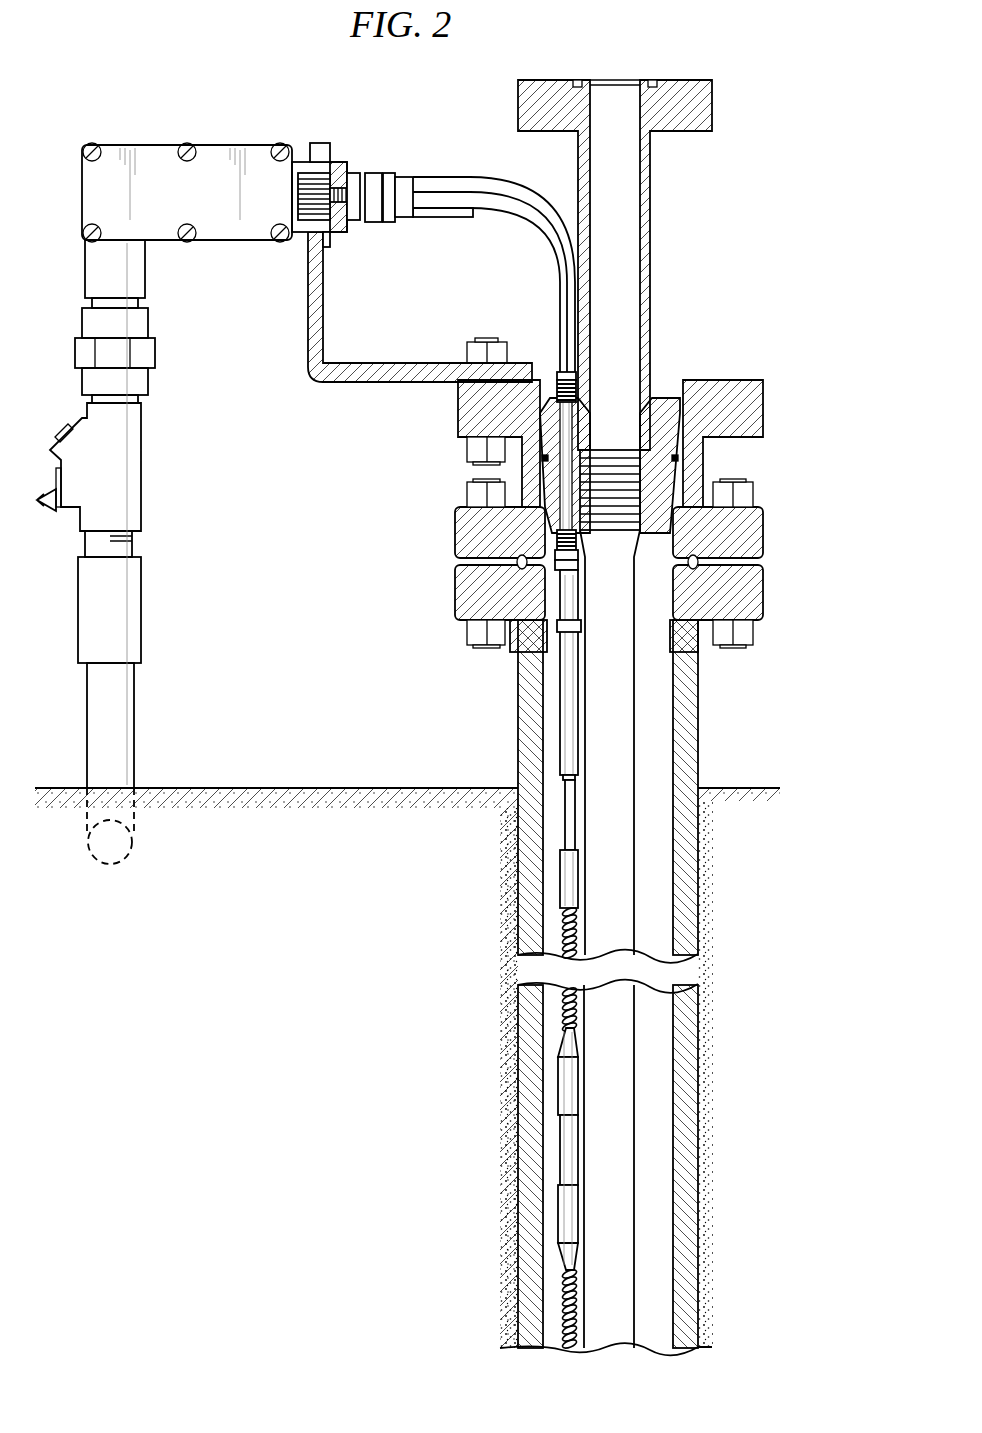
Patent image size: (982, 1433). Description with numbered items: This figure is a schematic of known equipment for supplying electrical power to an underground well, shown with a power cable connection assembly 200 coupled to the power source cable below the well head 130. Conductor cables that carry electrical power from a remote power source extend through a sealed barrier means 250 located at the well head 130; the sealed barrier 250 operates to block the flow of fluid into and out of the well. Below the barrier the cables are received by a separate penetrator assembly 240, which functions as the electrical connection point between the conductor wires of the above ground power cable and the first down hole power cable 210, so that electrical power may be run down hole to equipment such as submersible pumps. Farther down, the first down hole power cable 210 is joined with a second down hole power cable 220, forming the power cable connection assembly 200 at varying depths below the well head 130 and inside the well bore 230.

The well head 130 is at (740, 95).
The power cable connection assembly 200 is at (563, 1098).
The first down hole power cable 210 is at (563, 917).
The second down hole power cable 220 is at (563, 1290).
The well bore 230 is at (648, 1090).
The penetrator assembly 240 is at (563, 690).
The sealed barrier means 250 is at (548, 422).